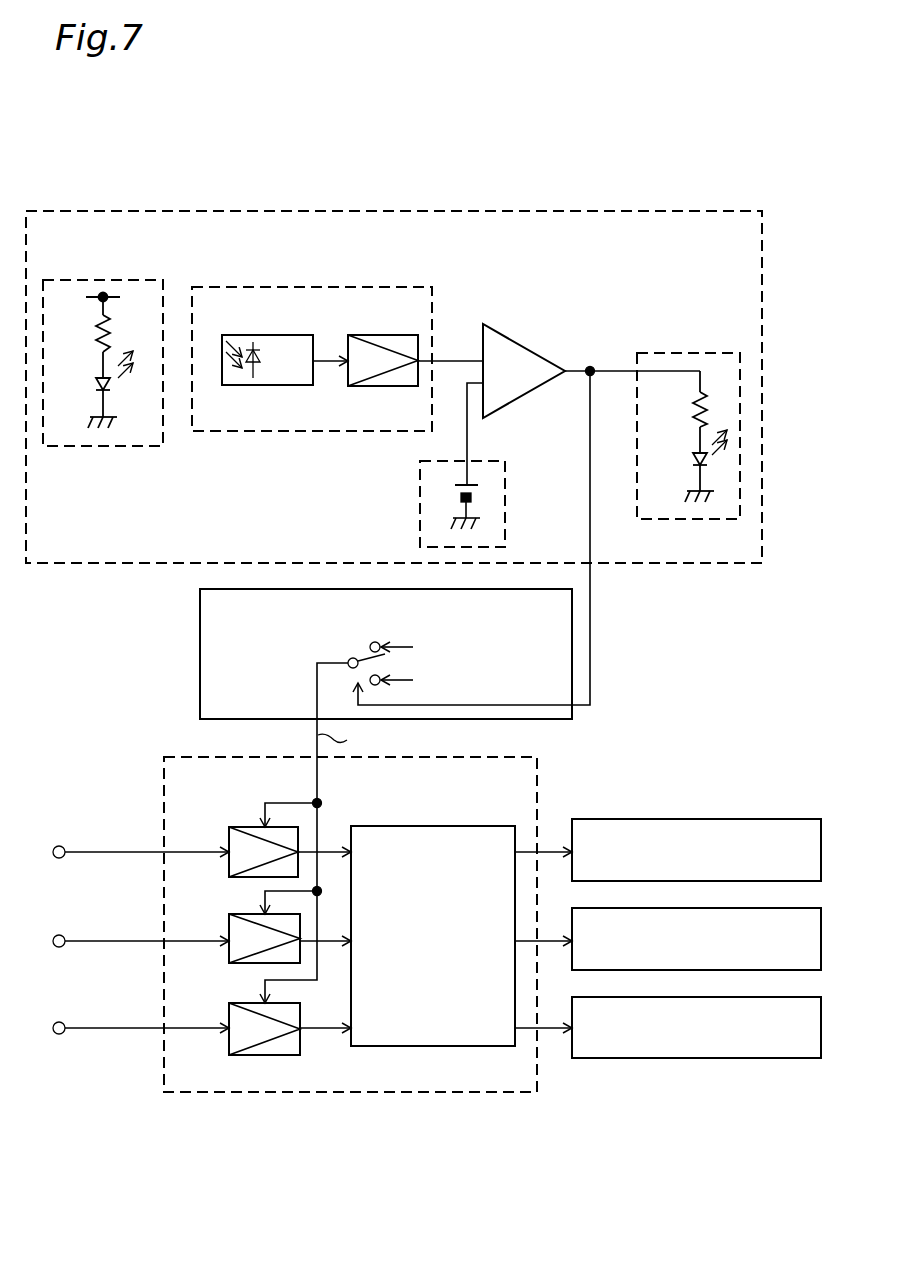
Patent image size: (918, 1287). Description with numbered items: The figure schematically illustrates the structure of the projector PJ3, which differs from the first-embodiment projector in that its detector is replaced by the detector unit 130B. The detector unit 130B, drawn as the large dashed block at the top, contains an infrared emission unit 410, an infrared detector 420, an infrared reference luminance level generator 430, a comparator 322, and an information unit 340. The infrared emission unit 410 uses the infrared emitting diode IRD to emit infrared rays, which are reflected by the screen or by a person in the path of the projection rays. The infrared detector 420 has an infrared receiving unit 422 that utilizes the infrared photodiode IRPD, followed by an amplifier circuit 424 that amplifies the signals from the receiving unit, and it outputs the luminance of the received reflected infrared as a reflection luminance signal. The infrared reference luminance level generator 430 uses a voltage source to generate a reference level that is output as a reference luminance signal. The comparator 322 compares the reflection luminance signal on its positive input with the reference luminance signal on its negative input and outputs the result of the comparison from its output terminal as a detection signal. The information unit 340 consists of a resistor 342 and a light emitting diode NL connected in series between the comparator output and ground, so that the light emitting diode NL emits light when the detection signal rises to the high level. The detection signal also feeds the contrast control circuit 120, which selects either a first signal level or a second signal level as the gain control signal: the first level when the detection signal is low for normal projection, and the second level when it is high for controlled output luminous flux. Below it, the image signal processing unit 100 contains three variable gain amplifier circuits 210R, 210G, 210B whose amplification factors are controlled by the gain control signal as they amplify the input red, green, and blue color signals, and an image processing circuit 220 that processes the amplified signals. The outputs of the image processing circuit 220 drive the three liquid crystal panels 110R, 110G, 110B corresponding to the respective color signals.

The projector PJ3 is at (102, 175).
The detector unit 130B is at (453, 211).
The infrared emission unit 410 is at (133, 446).
The infrared detector 420 is at (240, 431).
The infrared receiving unit 422 is at (270, 358).
The amplifier circuit 424 is at (388, 335).
The comparator 322 is at (524, 334).
The information unit 340 is at (698, 353).
The resistor 342 is at (690, 416).
The infrared reference luminance level generator 430 is at (420, 501).
The contrast control circuit 120 is at (200, 633).
The image signal processing unit 100 is at (181, 757).
The amplifier circuit 210R is at (243, 827).
The amplifier circuit 210G is at (244, 914).
The amplifier circuit 210B is at (246, 1003).
The image processing circuit 220 is at (453, 826).
The liquid crystal panel 110R is at (633, 819).
The liquid crystal panel 110G is at (631, 908).
The liquid crystal panel 110B is at (632, 997).
The infrared emitting diode IRD is at (98, 386).
The infrared photodiode IRPD is at (258, 360).
The light emitting diode NL is at (694, 462).